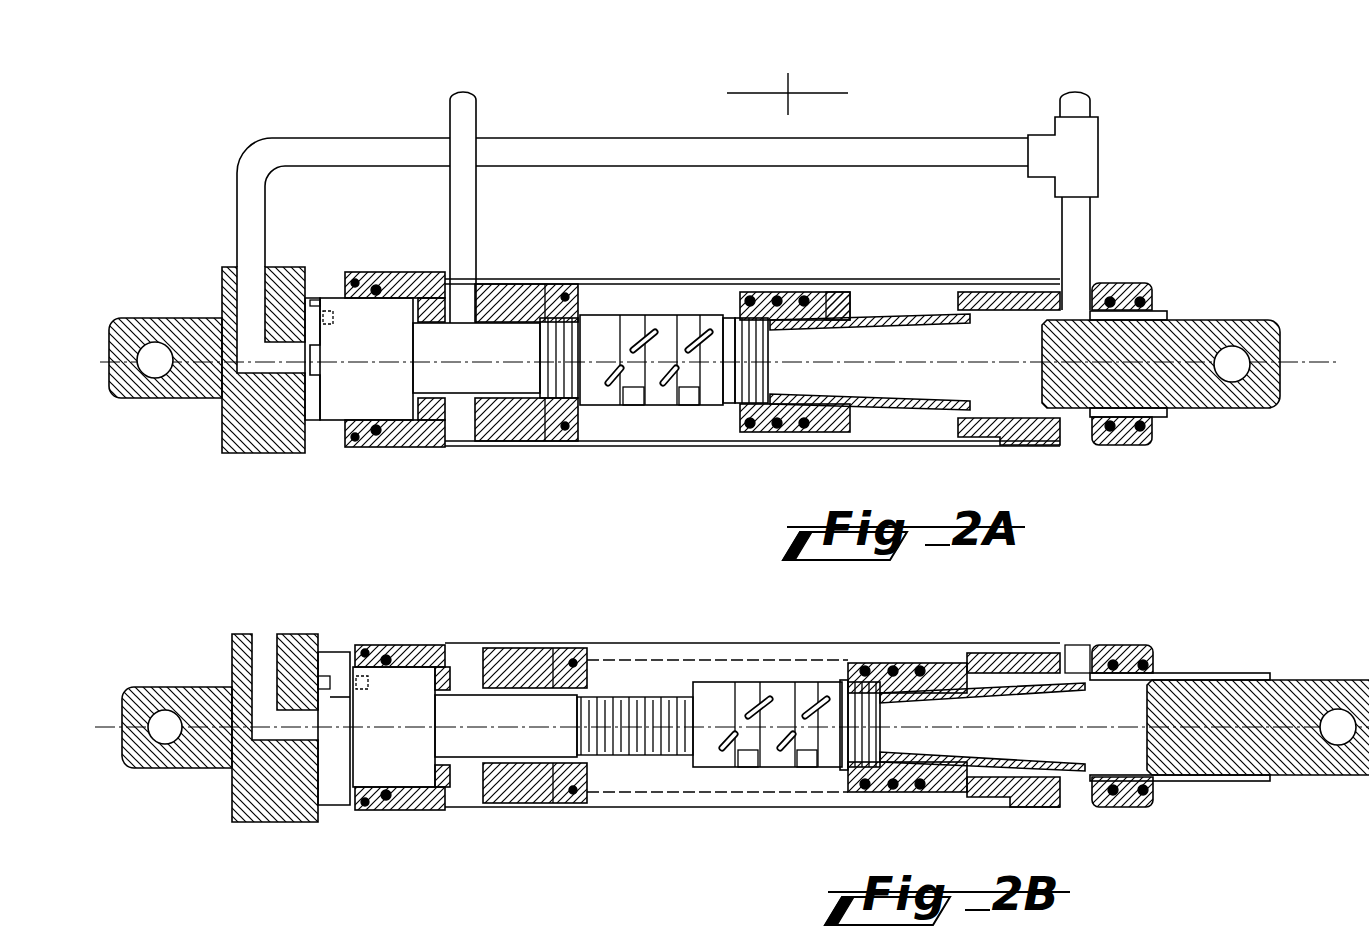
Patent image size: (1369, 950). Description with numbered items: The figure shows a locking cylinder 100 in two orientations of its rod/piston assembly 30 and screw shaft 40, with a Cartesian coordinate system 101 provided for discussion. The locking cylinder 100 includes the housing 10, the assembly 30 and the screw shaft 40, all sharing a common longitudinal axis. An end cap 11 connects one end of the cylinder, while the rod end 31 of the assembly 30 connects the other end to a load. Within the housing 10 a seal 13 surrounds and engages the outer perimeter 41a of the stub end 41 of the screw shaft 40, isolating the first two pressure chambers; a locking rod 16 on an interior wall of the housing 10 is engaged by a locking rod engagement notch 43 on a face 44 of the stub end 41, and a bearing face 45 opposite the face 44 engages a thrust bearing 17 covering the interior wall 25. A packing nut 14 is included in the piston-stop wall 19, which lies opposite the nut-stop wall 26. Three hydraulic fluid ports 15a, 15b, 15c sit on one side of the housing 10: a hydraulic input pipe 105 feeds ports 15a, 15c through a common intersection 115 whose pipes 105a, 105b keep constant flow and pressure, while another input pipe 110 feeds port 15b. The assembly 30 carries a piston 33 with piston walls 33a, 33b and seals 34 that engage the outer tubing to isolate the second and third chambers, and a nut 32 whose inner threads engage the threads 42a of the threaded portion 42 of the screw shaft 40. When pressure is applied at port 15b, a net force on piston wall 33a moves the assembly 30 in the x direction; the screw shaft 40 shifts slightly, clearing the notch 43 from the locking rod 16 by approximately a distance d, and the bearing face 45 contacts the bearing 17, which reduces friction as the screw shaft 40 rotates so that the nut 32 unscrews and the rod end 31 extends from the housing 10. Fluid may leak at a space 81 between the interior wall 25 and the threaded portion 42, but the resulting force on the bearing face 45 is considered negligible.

In FIG. 2A, the housing 10 is at (290, 455).
In FIG. 2B, the end cap 11 is at (132, 686).
In FIG. 2A, the seal 13 is at (375, 278).
In FIG. 2B, the seal 13 is at (383, 652).
In FIG. 2A, the packing nut 14 is at (1170, 318).
In FIG. 2B, the packing nut 14 is at (1229, 727).
In FIG. 2A, the hydraulic fluid port 15a is at (237, 265).
In FIG. 2B, the hydraulic fluid port 15a is at (275, 728).
In FIG. 2A, the hydraulic fluid port 15b is at (480, 283).
In FIG. 2B, the hydraulic fluid port 15b is at (488, 648).
In FIG. 2A, the hydraulic fluid port 15c is at (1096, 298).
In FIG. 2B, the hydraulic fluid port 15c is at (1068, 645).
In FIG. 2A, the locking rod 16 is at (318, 300).
In FIG. 2B, the locking rod 16 is at (356, 676).
In FIG. 2A, the thrust bearing 17 is at (440, 443).
In FIG. 2B, the thrust bearing 17 is at (450, 770).
In FIG. 2A, the piston-stop wall 19 is at (985, 294).
In FIG. 2B, the piston-stop wall 19 is at (982, 727).
In FIG. 2A, the interior wall 25 is at (520, 440).
In FIG. 2B, the interior wall 25 is at (470, 694).
In FIG. 2A, the nut-stop wall 26 is at (546, 283).
In FIG. 2B, the nut-stop wall 26 is at (752, 725).
In FIG. 2A, the rod/piston assembly 30 is at (1205, 412).
In FIG. 2A, the rod end 31 is at (1270, 320).
In FIG. 2B, the rod end 31 is at (1368, 650).
In FIG. 2A, the nut 32 is at (690, 407).
In FIG. 2B, the nut 32 is at (770, 725).
In FIG. 2A, the piston 33 is at (817, 432).
In FIG. 2B, the piston 33 is at (950, 662).
In FIG. 2A, the piston wall 33a is at (740, 322).
In FIG. 2B, the piston wall 33a is at (846, 678).
In FIG. 2A, the piston wall 33b is at (842, 292).
In FIG. 2A, the seals 34 is at (804, 296).
In FIG. 2B, the seals 34 is at (920, 666).
In FIG. 2A, the screw shaft 40 is at (348, 392).
In FIG. 2B, the screw shaft 40 is at (381, 761).
In FIG. 2B, the stub end 41 is at (336, 805).
In FIG. 2A, the outer perimeter 41a is at (316, 428).
In FIG. 2A, the threaded portion 42 is at (525, 340).
In FIG. 2B, the threaded portion 42 is at (518, 747).
In FIG. 2A, the threads 42a is at (556, 440).
In FIG. 2A, the locking rod engagement notch 43 is at (328, 306).
In FIG. 2B, the locking rod engagement notch 43 is at (340, 697).
In FIG. 2A, the face 44 is at (252, 388).
In FIG. 2A, the bearing face 45 is at (432, 298).
In FIG. 2B, the bearing face 45 is at (440, 667).
In FIG. 2B, the space 81 is at (494, 648).
In FIG. 2A, the locking cylinder 100 is at (191, 158).
In FIG. 2A, the Cartesian coordinate system 101 is at (745, 115).
In FIG. 2A, the hydraulic input pipe 105 is at (1090, 98).
In FIG. 2A, the pipe 105a is at (247, 155).
In FIG. 2A, the pipe 105b is at (1092, 212).
In FIG. 2A, the input pipe 110 is at (478, 130).
In FIG. 2A, the common intersection 115 is at (1055, 130).
In FIG. 2B, the distance d is at (331, 700).